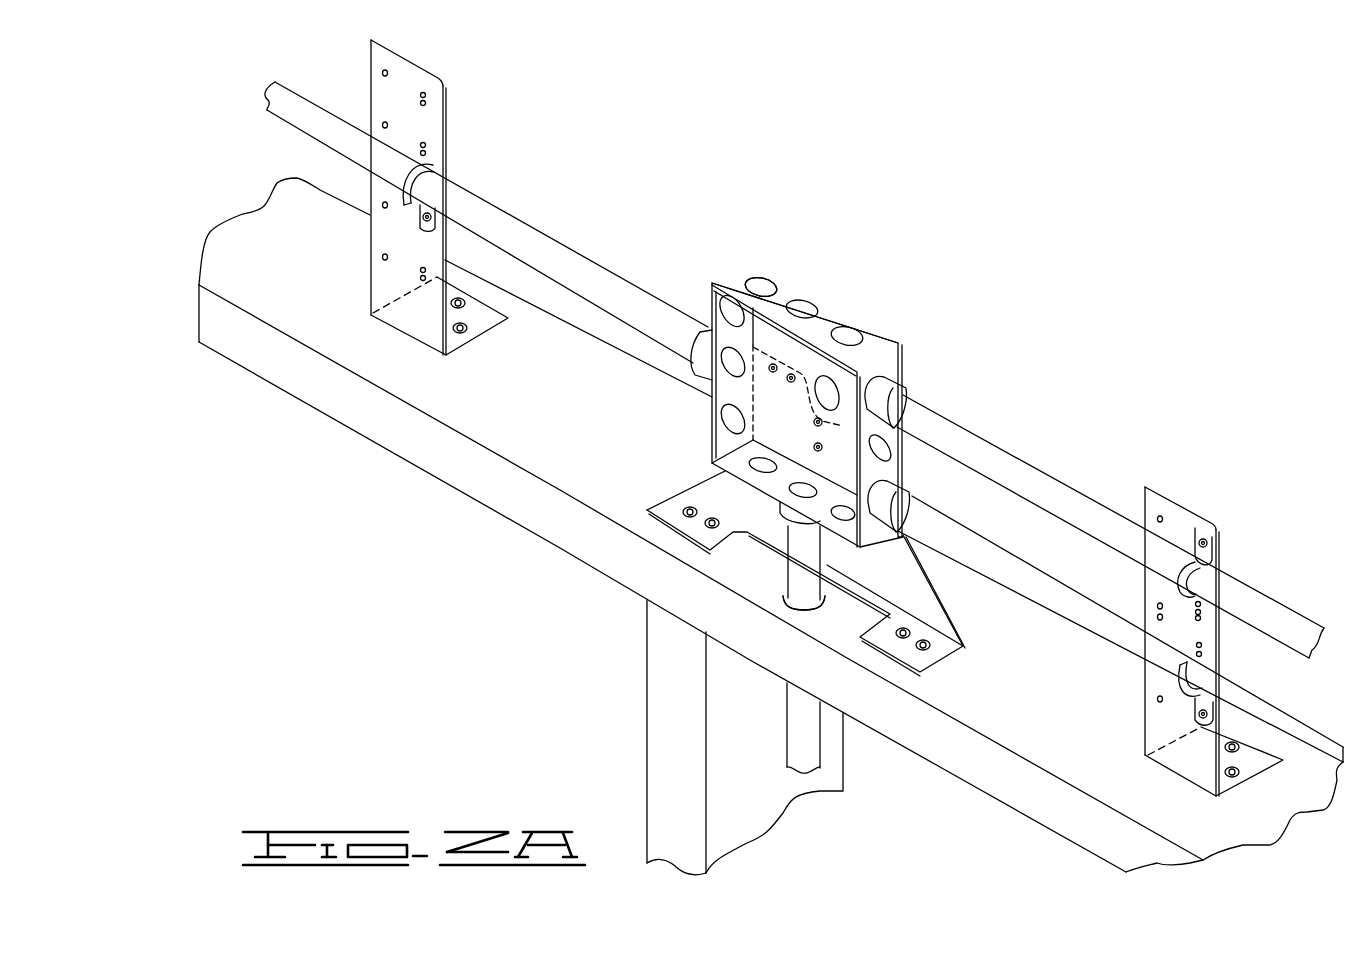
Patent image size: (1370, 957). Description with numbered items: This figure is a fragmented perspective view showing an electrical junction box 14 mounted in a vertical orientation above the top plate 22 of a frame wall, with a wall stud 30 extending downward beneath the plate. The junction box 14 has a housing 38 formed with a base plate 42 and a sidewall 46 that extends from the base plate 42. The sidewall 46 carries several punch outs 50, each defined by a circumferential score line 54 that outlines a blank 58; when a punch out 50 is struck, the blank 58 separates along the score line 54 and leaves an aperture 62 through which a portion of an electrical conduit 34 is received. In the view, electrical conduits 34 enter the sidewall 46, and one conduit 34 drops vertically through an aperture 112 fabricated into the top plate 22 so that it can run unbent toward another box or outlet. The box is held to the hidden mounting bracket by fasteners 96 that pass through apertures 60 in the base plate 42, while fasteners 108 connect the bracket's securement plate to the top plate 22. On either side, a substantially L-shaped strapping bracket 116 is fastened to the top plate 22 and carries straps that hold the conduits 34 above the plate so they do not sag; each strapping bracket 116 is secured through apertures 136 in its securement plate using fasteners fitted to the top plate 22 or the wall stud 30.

The electrical junction box 14 is at (873, 323).
The top plate 22 is at (296, 381).
The wall stud 30 is at (647, 722).
The electrical conduit 34 is at (810, 757).
The housing 38 is at (803, 264).
The base plate 42 is at (763, 333).
The sidewall 46 is at (903, 357).
The punch out 50 is at (759, 265).
The score line 54 is at (758, 270).
The blank 58 is at (767, 283).
The aperture of the base plate 60 is at (757, 380).
The aperture 62 is at (816, 305).
The fastener 96 is at (787, 381).
The fastener 108 is at (688, 512).
The aperture of the top plate 112 is at (768, 598).
The strapping bracket 116 is at (354, 67).
The aperture of the securement plate 136 is at (466, 332).